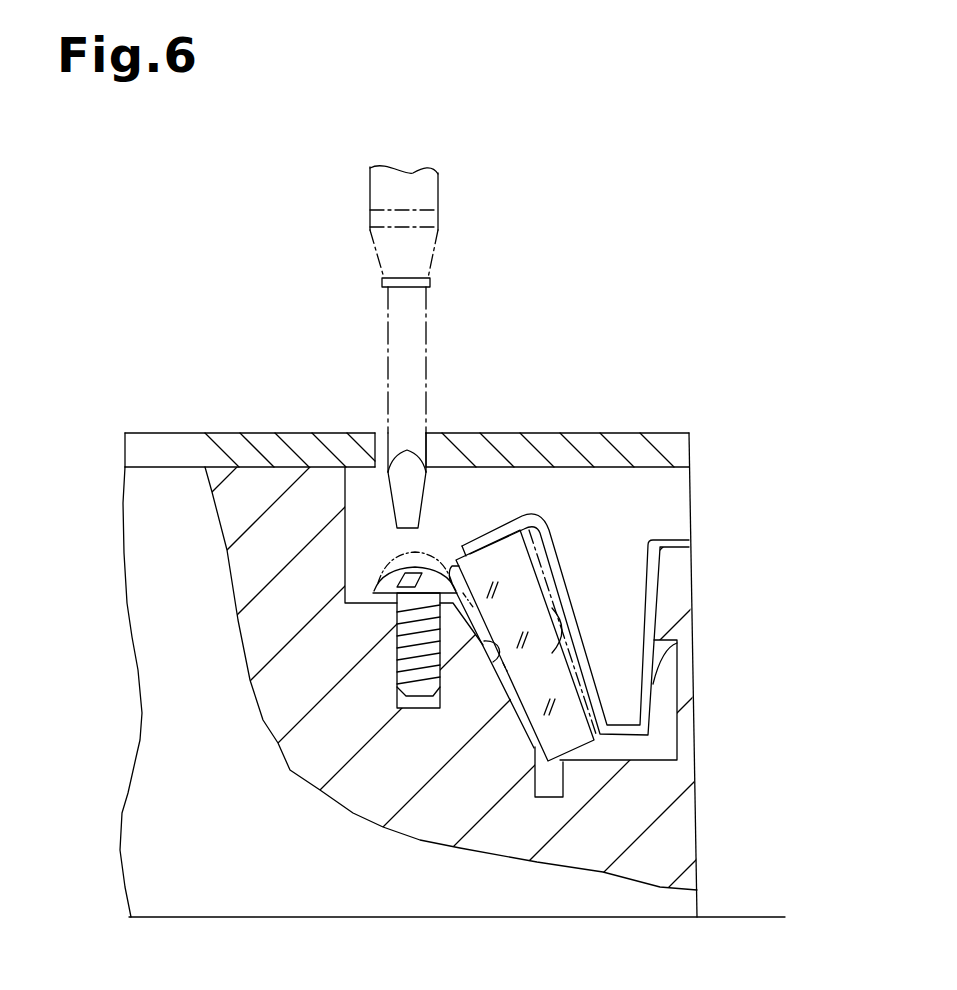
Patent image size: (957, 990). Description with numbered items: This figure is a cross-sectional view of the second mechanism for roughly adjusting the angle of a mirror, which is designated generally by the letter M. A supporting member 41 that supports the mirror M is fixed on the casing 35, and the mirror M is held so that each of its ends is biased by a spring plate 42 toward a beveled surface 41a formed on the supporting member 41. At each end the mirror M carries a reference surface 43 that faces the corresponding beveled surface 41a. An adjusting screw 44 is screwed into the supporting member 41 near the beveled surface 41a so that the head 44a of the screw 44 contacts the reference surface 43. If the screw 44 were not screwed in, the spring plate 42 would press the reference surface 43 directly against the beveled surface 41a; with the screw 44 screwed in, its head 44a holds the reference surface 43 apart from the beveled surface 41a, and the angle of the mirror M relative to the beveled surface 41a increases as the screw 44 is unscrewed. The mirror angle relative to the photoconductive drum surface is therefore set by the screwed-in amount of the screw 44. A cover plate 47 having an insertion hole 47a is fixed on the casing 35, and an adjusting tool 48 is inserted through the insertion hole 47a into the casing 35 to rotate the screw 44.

The casing 35 is at (633, 757).
The supporting member 41 is at (684, 597).
The beveled surface 41a is at (499, 662).
The spring plate 42 is at (550, 572).
The reference surface 43 is at (470, 620).
The adjusting screw 44 is at (347, 539).
The screw head 44a is at (377, 592).
The cover plate 47 is at (476, 448).
The insertion hole 47a is at (383, 442).
The adjusting tool 48 is at (423, 221).
The mirror M is at (480, 563).